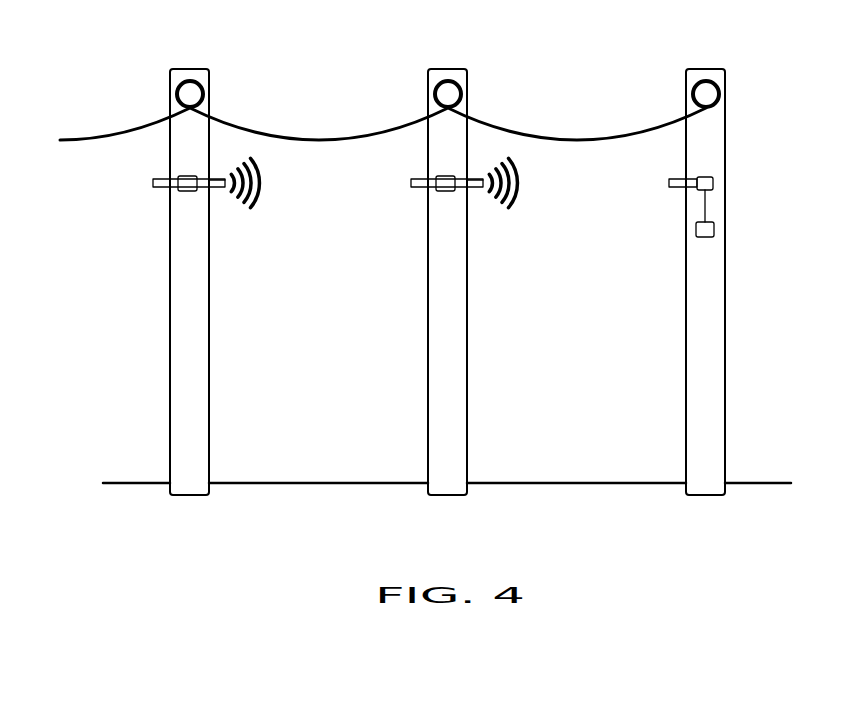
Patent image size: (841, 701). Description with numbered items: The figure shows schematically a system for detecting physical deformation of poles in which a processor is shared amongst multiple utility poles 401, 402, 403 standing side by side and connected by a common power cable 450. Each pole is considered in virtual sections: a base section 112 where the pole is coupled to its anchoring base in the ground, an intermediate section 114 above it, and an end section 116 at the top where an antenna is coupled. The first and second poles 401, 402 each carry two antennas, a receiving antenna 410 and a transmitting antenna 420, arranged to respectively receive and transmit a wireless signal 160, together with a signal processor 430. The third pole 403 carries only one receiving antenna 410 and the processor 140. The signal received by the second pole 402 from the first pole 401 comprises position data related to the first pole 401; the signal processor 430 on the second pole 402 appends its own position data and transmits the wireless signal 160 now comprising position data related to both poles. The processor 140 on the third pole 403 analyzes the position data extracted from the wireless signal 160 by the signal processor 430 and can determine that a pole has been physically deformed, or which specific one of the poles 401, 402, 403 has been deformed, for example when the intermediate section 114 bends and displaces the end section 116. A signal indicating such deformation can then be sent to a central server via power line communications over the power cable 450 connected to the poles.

The first utility pole 401 is at (200, 33).
The second utility pole 402 is at (458, 33).
The third utility pole 403 is at (716, 33).
The power cable 450 is at (318, 136).
The receiving antenna 410 is at (158, 184).
The transmitting antenna 420 is at (217, 187).
The signal processor 430 is at (188, 191).
The wireless signal 160 is at (261, 176).
The processor 140 is at (714, 230).
The end section 116 is at (199, 263).
The intermediate section 114 is at (179, 357).
The base section 112 is at (197, 481).